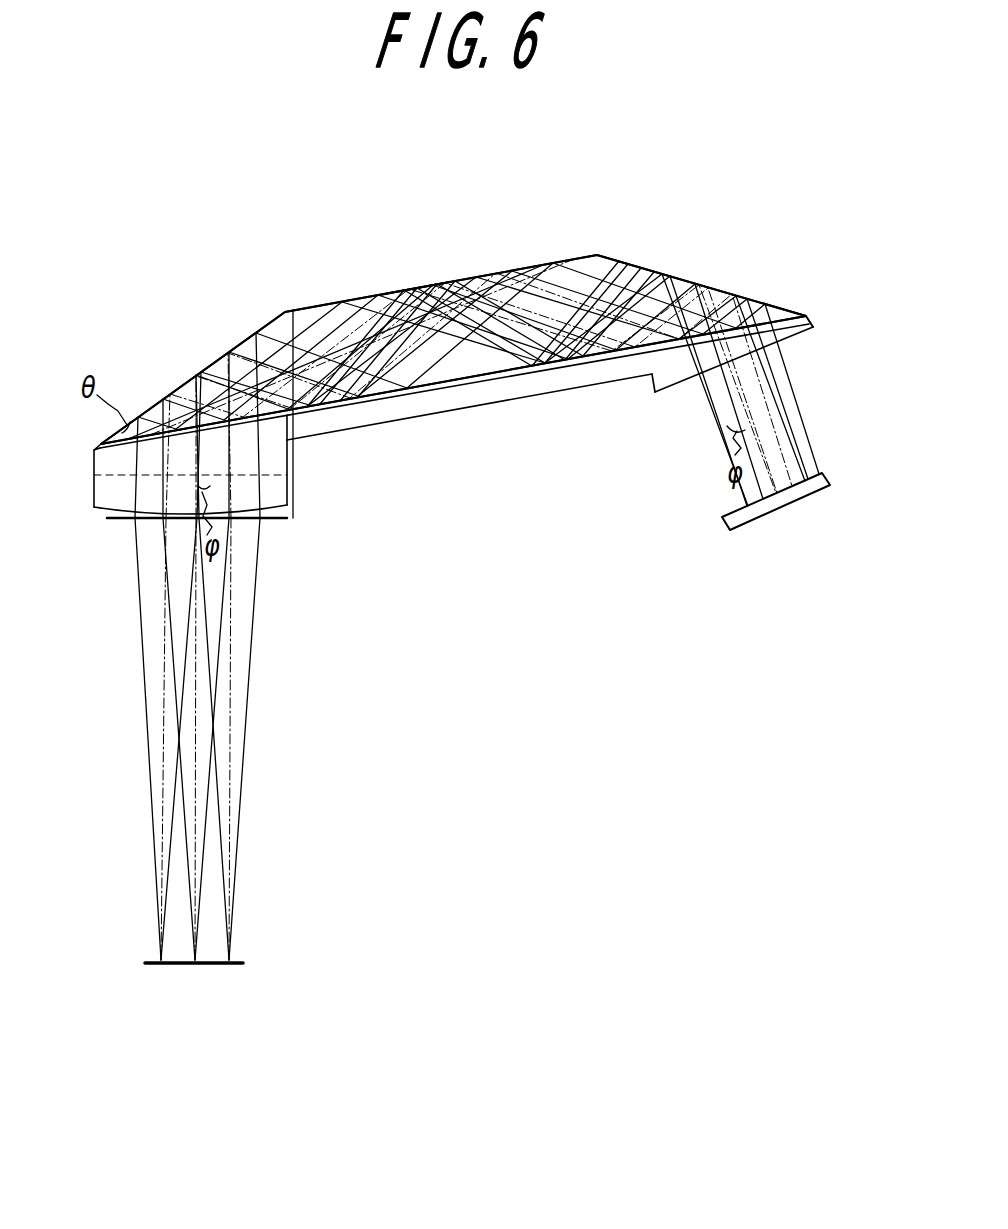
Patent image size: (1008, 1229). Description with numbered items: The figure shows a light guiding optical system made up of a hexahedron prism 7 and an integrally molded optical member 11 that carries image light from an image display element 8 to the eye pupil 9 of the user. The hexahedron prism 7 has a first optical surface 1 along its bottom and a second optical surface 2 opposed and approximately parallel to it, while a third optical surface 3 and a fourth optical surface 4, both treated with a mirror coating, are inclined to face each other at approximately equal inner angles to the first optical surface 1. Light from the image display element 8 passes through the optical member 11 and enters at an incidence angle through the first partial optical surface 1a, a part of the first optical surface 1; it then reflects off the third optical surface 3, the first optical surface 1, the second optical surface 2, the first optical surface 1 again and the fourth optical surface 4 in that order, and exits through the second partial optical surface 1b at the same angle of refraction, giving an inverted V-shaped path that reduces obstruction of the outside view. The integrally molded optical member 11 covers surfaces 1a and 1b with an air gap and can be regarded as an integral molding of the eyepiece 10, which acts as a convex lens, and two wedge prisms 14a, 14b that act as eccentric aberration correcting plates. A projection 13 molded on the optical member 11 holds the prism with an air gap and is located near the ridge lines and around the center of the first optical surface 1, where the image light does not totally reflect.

The first optical surface 1 is at (453, 368).
The first partial optical surface 1a is at (800, 262).
The second partial optical surface 1b is at (123, 376).
The second optical surface 2 is at (441, 239).
The third optical surface 3 is at (701, 245).
The fourth optical surface 4 is at (193, 344).
The hexahedron prism 7 is at (401, 231).
The image display element 8 is at (776, 530).
The eye pupil 9 is at (194, 1016).
The eyepiece 10 is at (235, 505).
The integrally molded optical member 11 is at (550, 421).
The projection 13 is at (460, 383).
The wedge prism 14a is at (632, 439).
The wedge prism 14b is at (330, 460).